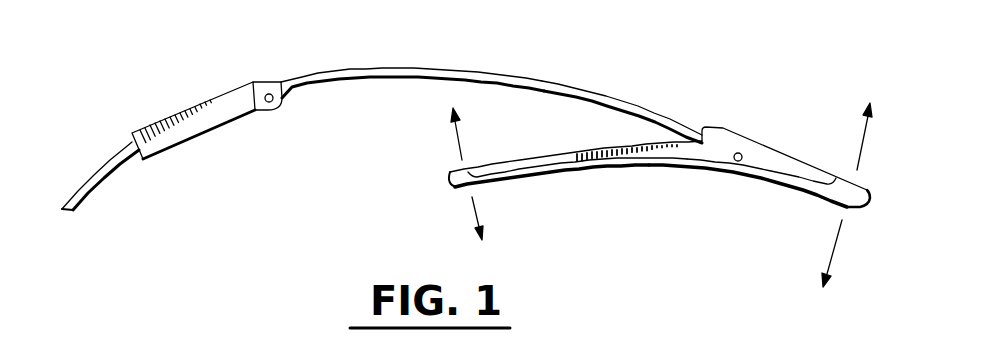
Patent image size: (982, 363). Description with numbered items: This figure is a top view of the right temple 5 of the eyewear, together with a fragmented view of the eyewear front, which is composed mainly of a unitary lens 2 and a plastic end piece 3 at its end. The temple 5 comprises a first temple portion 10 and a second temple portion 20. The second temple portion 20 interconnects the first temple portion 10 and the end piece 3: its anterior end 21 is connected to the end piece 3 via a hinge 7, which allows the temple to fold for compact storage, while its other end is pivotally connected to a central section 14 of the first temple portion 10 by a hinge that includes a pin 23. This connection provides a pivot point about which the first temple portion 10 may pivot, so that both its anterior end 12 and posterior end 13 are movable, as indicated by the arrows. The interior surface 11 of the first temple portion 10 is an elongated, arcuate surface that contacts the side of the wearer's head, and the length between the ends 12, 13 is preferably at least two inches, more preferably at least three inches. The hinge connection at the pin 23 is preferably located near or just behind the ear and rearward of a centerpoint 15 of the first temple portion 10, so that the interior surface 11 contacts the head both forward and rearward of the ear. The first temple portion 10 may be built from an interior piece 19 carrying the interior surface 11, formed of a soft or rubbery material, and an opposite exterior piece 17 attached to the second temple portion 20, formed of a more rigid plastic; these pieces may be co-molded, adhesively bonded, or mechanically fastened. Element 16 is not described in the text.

The unitary lens 2 is at (93, 193).
The end piece 3 is at (163, 110).
The right temple 5 is at (430, 66).
The hinge 7 is at (280, 108).
The first temple portion 10 is at (562, 162).
The interior surface 11 is at (622, 171).
The anterior end 12 is at (452, 178).
The posterior end 13 is at (855, 212).
The central section 14 is at (715, 157).
The centerpoint 15 is at (668, 172).
The clamp block 16 is at (717, 127).
The exterior piece 17 is at (527, 163).
The interior piece 19 is at (517, 183).
The second temple portion 20 is at (550, 82).
The anterior end 21 is at (256, 82).
The pin 23 is at (742, 155).